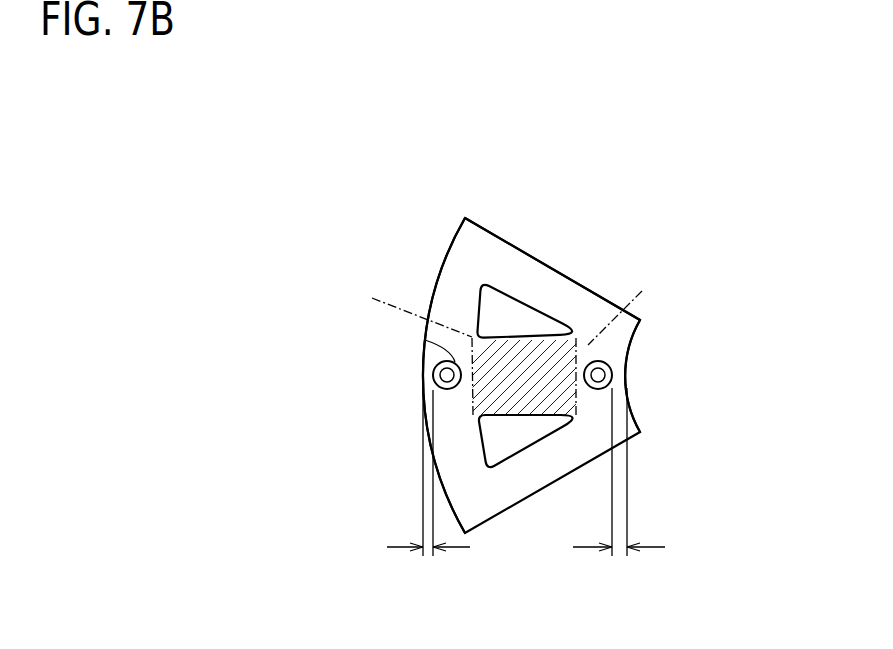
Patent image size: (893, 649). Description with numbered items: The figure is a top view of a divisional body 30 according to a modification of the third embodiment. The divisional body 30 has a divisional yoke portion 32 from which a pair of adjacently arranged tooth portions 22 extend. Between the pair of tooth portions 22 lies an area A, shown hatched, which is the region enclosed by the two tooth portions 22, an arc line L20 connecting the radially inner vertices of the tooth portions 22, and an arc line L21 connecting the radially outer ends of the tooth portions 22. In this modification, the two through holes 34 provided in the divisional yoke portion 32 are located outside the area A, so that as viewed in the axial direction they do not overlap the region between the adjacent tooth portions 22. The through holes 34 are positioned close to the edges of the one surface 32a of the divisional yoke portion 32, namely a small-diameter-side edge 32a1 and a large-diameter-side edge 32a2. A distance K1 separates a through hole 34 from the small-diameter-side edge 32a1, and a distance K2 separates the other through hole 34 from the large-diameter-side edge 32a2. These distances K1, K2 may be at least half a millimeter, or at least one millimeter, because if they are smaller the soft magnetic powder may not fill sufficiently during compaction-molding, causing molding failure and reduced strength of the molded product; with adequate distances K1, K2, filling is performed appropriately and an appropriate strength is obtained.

The divisional body 30 is at (673, 230).
The divisional yoke portion 32 is at (462, 246).
The one surface 32a is at (448, 300).
The small-diameter-side edge 32a1 is at (627, 372).
The large-diameter-side edge 32a2 is at (422, 373).
The through hole 34 is at (425, 340).
The tooth portion 22 is at (503, 305).
The area A is at (540, 391).
The arc line L20 is at (641, 307).
The arc line L21 is at (398, 305).
The distance K1 is at (619, 489).
The distance K2 is at (428, 490).